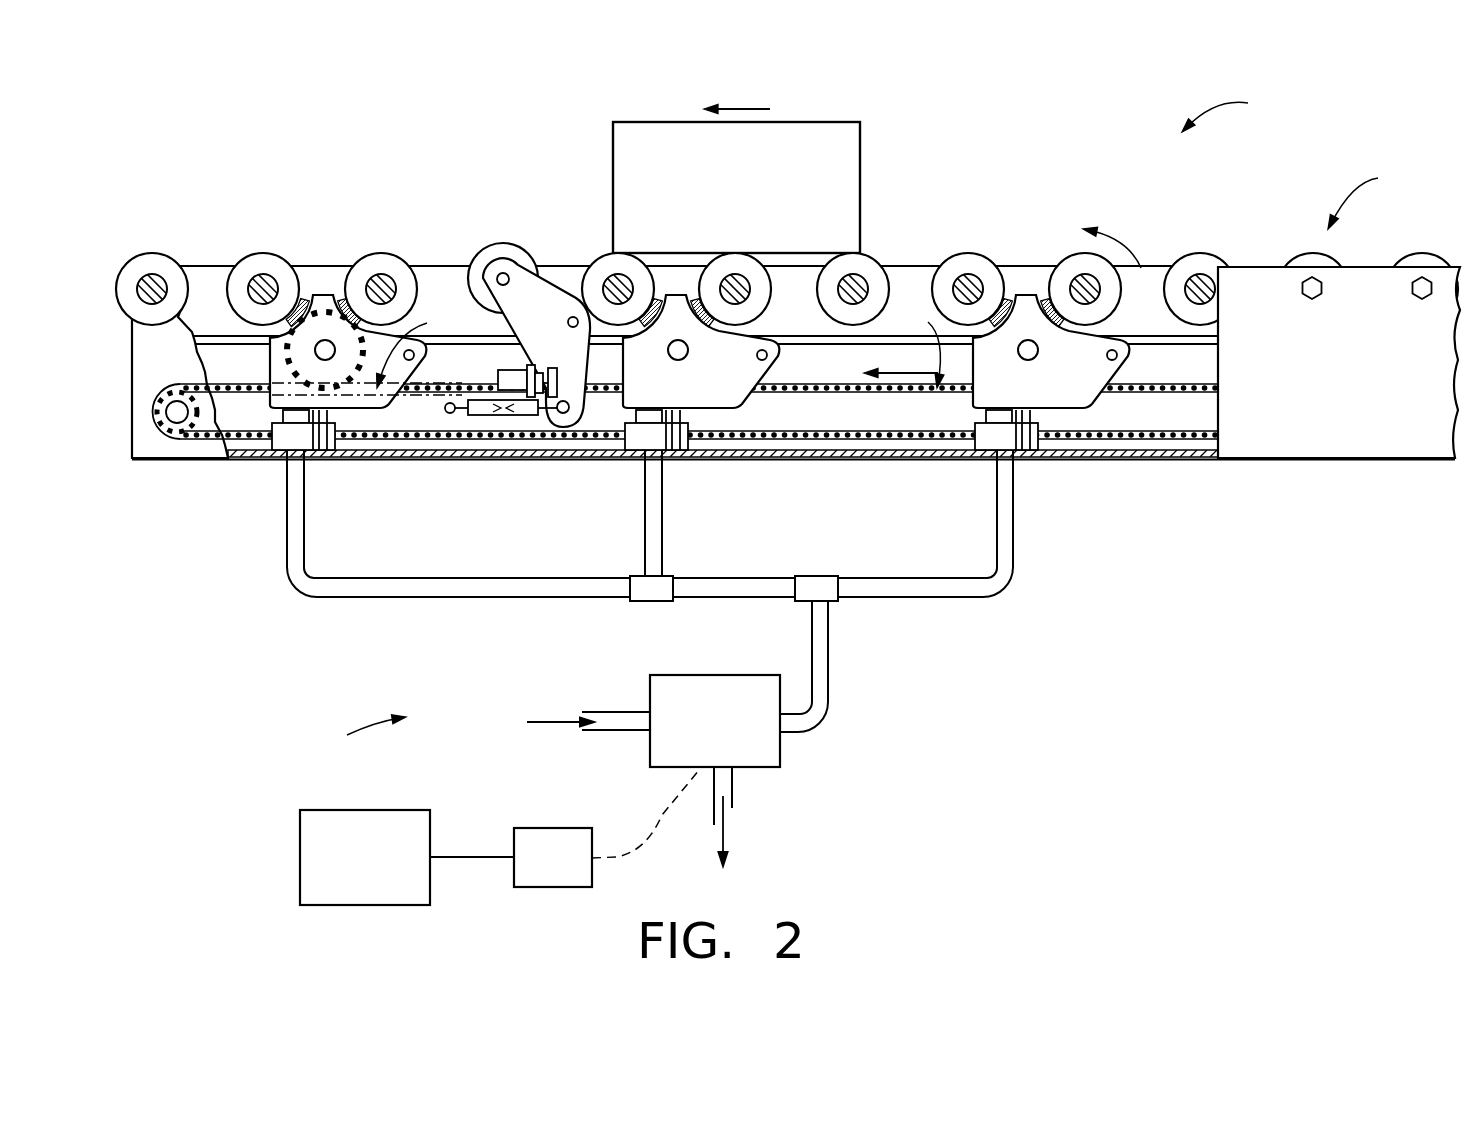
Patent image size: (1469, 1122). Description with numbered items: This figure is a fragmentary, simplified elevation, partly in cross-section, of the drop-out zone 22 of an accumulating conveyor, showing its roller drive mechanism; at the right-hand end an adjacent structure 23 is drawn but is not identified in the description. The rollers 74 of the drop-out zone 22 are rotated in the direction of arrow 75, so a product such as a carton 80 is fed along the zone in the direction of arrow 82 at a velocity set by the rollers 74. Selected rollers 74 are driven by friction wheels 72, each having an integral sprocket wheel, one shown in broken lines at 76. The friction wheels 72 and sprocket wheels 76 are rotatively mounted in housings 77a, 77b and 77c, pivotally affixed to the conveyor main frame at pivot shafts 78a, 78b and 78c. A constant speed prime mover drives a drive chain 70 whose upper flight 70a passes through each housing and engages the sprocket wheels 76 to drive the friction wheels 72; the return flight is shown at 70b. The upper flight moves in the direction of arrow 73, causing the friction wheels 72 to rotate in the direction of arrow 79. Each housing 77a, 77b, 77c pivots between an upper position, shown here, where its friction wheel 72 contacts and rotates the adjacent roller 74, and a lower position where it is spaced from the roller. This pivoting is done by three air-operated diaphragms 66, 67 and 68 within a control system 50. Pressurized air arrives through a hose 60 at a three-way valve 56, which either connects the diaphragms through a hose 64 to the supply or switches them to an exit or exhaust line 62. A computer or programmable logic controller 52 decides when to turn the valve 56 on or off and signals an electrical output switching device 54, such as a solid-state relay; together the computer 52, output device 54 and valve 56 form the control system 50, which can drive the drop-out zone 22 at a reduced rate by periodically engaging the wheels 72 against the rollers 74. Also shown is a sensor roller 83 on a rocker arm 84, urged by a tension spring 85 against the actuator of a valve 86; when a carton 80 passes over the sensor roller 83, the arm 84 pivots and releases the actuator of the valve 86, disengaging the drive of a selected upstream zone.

The drop-out zone 22 is at (793, 275).
The cover plate 23 is at (1339, 309).
The control system 50 is at (410, 786).
The computer 52 is at (385, 870).
The output device 54 is at (545, 878).
The valve 56 is at (725, 733).
The conduit or hose 60 is at (612, 735).
The exit line 62 is at (735, 810).
The conduit or hose 64 is at (832, 660).
The diaphragm 66 is at (290, 442).
The diaphragm 67 is at (645, 442).
The diaphragm 68 is at (1000, 425).
The drive chain 70 is at (702, 372).
The upper flight 70a is at (893, 393).
The return flight 70b is at (860, 432).
The friction wheel 72 is at (305, 300).
The arrow 73 is at (922, 367).
The roller 74 is at (152, 254).
The arrow 75 is at (1132, 250).
The sprocket wheel 76 is at (272, 357).
The housing 77a is at (362, 407).
The housing 77b is at (728, 400).
The housing 77c is at (1072, 390).
The pivot shaft 78a is at (414, 355).
The pivot shaft 78b is at (767, 356).
The pivot shaft 78c is at (1117, 356).
The arrow 79 is at (422, 347).
The carton 80 is at (762, 182).
The arrow 82 is at (745, 109).
The sensor roller 83 is at (478, 252).
The rocker arm 84 is at (548, 297).
The tension spring 85 is at (512, 417).
The valve 86 is at (510, 370).